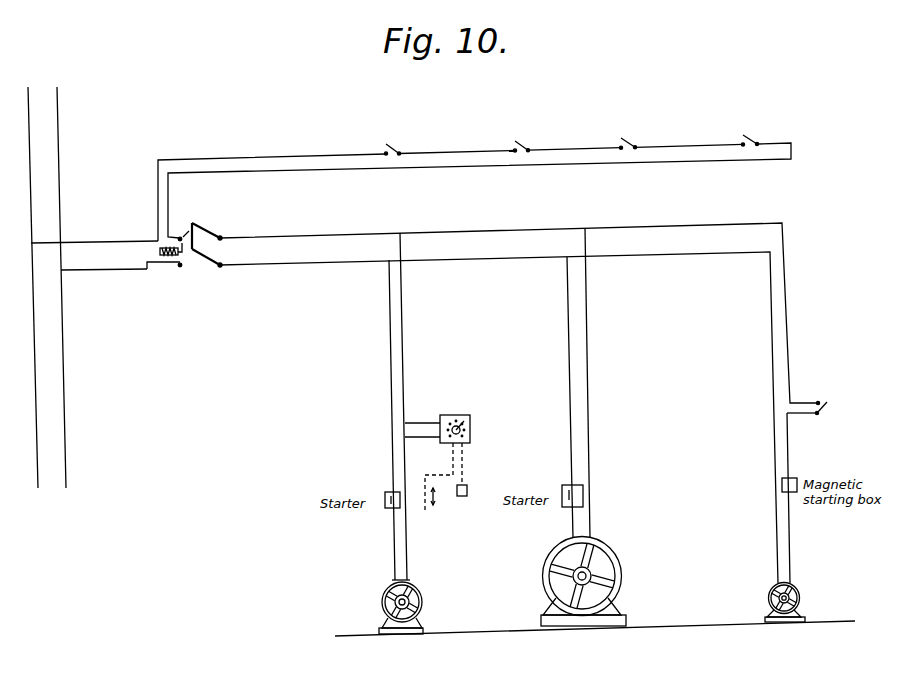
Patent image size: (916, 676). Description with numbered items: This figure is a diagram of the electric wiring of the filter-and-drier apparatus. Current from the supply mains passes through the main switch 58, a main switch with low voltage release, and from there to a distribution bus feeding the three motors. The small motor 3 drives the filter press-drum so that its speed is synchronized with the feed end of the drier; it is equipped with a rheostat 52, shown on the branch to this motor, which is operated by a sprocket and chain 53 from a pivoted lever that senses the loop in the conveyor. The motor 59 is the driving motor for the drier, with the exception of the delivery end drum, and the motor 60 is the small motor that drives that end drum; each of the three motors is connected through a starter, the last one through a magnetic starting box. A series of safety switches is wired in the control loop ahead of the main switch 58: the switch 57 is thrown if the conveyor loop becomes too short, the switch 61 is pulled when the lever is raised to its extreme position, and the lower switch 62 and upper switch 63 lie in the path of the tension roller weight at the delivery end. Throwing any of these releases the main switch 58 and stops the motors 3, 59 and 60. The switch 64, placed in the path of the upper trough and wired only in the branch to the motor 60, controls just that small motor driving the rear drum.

The small motor 3 is at (408, 607).
The rheostat 52 is at (459, 414).
The sprocket and chain 53 is at (478, 478).
The switch 57 is at (397, 136).
The main switch 58 is at (200, 273).
The driving motor 59 is at (598, 582).
The small motor 60 is at (797, 598).
The switch 61 is at (530, 134).
The lower switch 62 is at (634, 131).
The upper switch 63 is at (755, 128).
The switch 64 is at (824, 394).